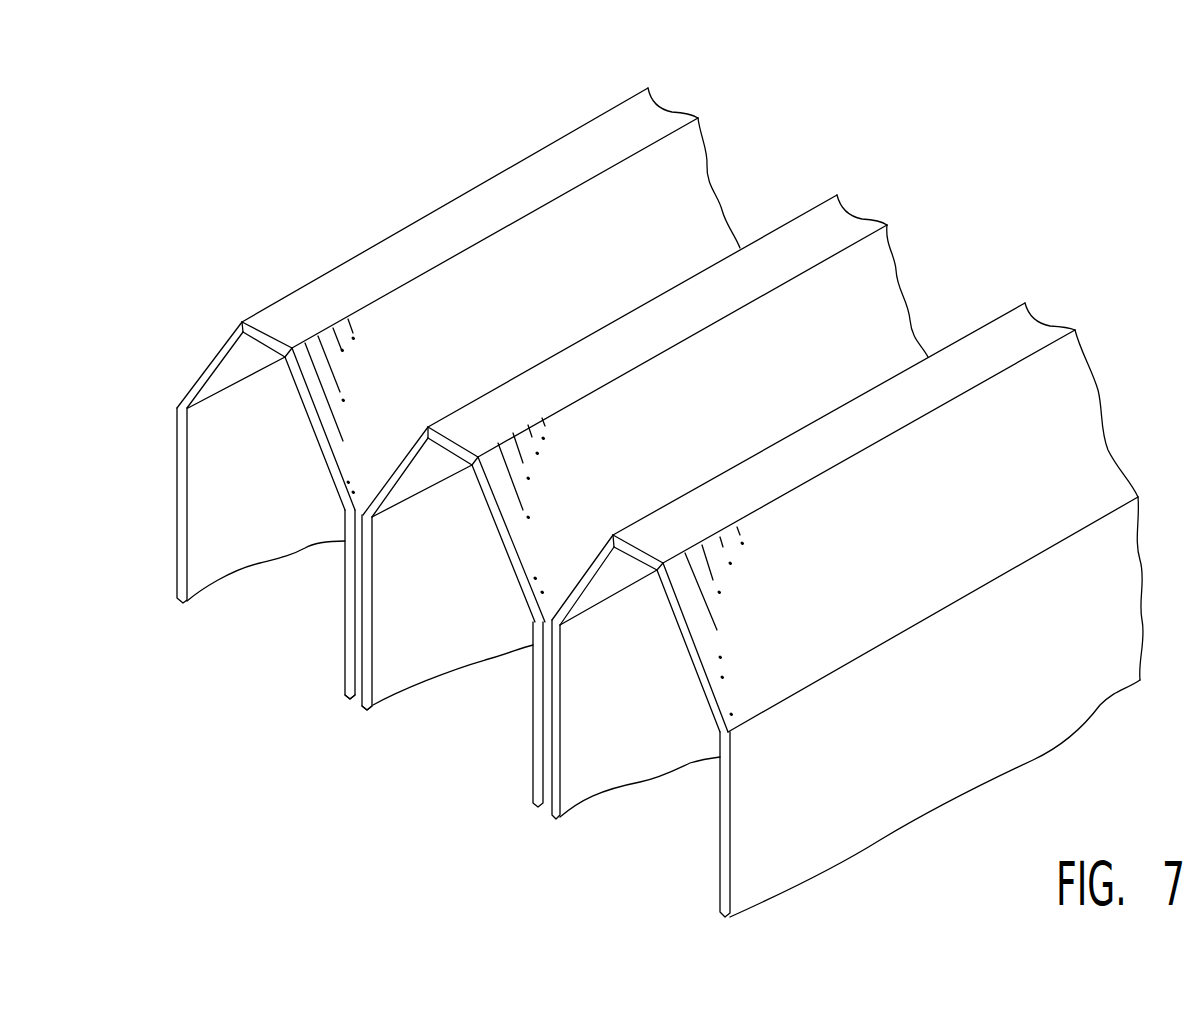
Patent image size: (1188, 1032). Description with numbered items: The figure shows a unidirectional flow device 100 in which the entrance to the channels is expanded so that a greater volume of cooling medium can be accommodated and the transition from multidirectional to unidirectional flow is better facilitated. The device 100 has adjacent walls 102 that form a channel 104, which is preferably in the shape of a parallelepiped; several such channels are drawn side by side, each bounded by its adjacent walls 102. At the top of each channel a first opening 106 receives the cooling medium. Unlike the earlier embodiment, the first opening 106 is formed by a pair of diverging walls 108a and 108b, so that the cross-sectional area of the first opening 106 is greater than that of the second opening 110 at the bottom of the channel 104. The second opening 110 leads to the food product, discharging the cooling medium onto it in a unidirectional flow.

The unidirectional flow device 100 is at (660, 476).
The adjacent walls 102 is at (376, 558).
The channel 104 is at (357, 647).
The first opening 106 is at (400, 296).
The diverging wall 108a is at (295, 372).
The diverging wall 108b is at (407, 453).
The second opening 110 is at (363, 705).